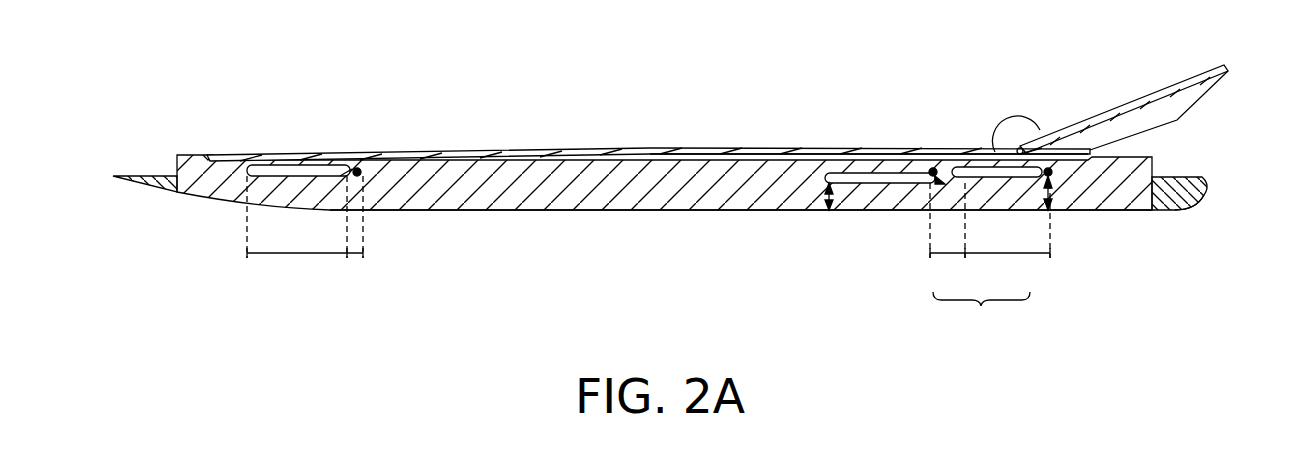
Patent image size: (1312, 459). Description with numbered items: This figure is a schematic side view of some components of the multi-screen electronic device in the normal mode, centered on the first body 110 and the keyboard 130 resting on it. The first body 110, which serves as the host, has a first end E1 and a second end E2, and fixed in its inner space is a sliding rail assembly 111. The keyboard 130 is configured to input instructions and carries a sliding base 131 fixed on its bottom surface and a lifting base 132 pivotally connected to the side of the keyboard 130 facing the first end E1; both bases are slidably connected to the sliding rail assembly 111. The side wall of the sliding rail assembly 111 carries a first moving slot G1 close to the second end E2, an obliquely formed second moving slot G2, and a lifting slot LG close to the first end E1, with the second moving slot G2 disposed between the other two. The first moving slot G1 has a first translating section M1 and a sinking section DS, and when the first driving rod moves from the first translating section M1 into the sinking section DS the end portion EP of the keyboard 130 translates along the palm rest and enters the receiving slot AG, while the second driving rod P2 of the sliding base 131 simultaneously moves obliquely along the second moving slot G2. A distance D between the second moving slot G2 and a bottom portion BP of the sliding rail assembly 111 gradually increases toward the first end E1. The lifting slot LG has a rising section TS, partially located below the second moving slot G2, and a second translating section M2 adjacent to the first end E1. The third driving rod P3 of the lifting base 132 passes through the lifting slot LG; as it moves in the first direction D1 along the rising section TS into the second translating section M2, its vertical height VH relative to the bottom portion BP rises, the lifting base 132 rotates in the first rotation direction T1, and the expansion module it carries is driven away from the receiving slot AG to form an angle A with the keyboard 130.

The sliding rail assembly 111 is at (491, 184).
The first body 110 is at (1176, 198).
The keyboard 130 is at (488, 149).
The sliding base 131 is at (973, 167).
The lifting base 132 is at (1072, 149).
The end portion EP is at (207, 154).
The third driving rod P3 is at (357, 167).
The second driving rod P2 is at (933, 170).
The angle A is at (1016, 120).
The first rotation direction T1 is at (1236, 67).
The first direction D1 is at (360, 33).
The first end E1 is at (1202, 192).
The second end E2 is at (136, 182).
The first translating section M1 is at (297, 236).
The sinking section DS is at (356, 236).
The first moving slot G1 is at (376, 292).
The second moving slot G2 is at (861, 180).
The rising section TS is at (947, 239).
The second translating section M2 is at (1007, 239).
The lifting slot LG is at (981, 320).
The vertical height VH is at (1050, 206).
The distance D is at (826, 206).
The bottom portion BP is at (612, 211).
The receiving slot AG is at (714, 151).